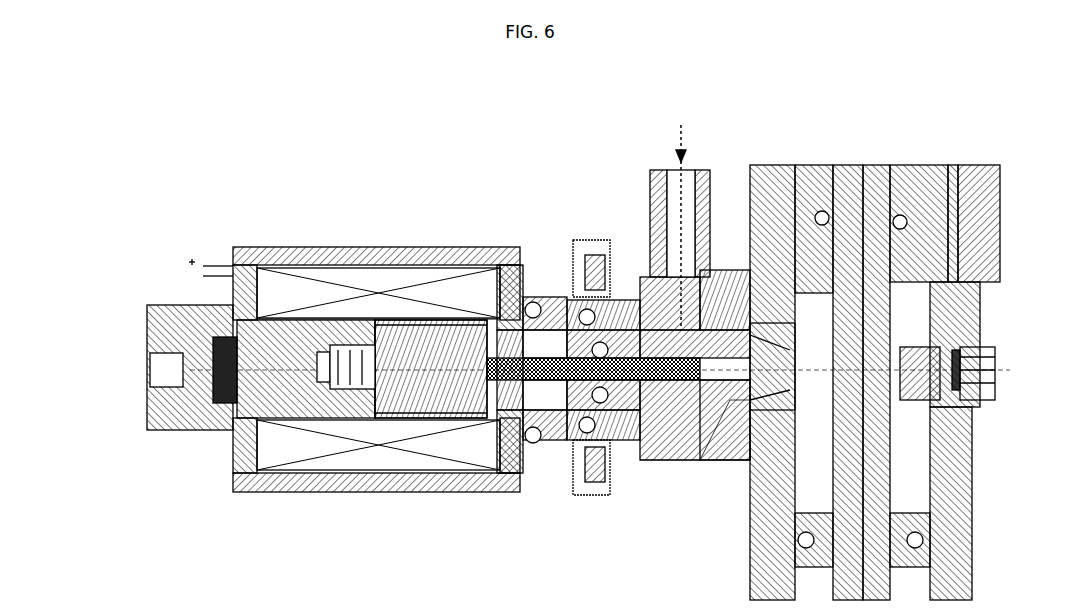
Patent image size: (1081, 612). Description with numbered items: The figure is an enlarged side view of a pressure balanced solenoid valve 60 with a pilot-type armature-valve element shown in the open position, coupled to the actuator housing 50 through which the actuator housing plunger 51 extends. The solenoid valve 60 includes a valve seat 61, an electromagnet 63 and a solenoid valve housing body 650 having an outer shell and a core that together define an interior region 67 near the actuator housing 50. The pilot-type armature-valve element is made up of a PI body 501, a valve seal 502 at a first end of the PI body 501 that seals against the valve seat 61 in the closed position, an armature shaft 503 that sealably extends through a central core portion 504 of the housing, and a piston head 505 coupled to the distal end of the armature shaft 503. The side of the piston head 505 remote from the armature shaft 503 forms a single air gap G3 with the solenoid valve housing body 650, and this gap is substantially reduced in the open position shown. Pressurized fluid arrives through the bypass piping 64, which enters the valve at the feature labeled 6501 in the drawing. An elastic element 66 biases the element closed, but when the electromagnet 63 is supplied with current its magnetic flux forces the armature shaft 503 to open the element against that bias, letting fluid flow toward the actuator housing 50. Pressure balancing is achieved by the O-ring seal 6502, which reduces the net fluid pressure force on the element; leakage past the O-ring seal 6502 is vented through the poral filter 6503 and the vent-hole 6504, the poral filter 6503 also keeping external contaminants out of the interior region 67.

The actuator housing 50 is at (930, 238).
The actuator housing plunger 51 is at (875, 465).
The solenoid valve 60 is at (462, 245).
The valve seat 61 is at (795, 345).
The electromagnet 63 is at (375, 272).
The bypass piping 64 is at (700, 183).
The elastic element 66 is at (330, 375).
The interior region 67 is at (668, 475).
The PI body 501 is at (723, 337).
The valve seal 502 is at (700, 395).
The armature shaft 503 is at (540, 362).
The central core portion 504 is at (578, 352).
The piston head 505 is at (398, 400).
The solenoid valve housing body 650 is at (628, 300).
The inlet 6501 is at (650, 322).
The O-ring seal 6502 is at (600, 395).
The poral filter 6503 is at (222, 388).
The vent-hole 6504 is at (183, 370).
The single air gap G3 is at (364, 434).